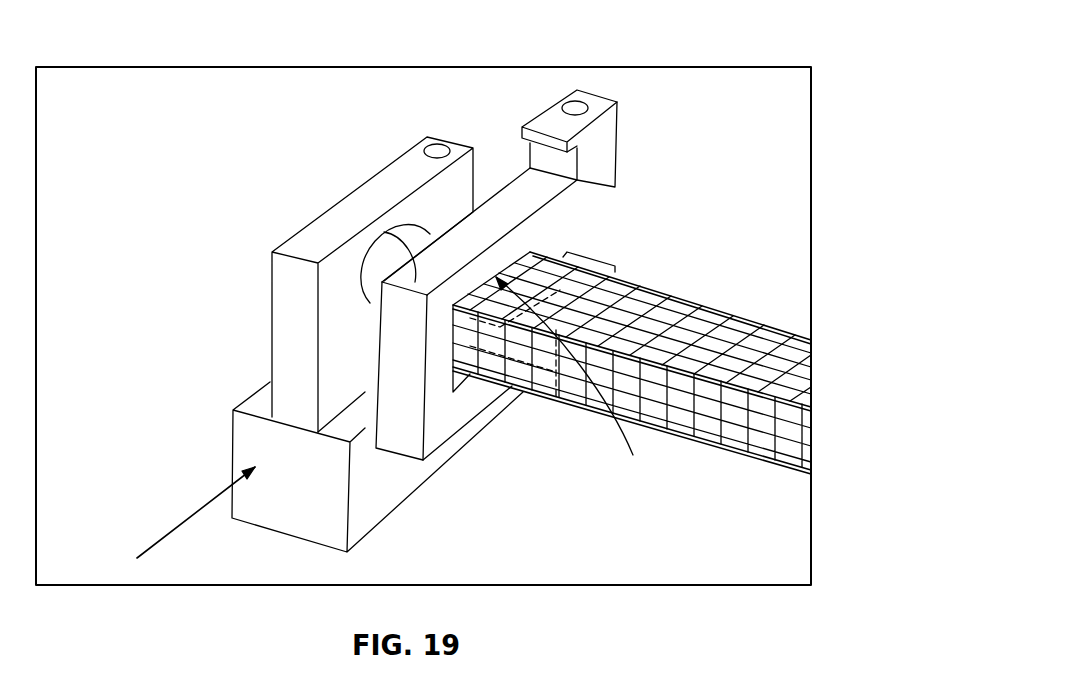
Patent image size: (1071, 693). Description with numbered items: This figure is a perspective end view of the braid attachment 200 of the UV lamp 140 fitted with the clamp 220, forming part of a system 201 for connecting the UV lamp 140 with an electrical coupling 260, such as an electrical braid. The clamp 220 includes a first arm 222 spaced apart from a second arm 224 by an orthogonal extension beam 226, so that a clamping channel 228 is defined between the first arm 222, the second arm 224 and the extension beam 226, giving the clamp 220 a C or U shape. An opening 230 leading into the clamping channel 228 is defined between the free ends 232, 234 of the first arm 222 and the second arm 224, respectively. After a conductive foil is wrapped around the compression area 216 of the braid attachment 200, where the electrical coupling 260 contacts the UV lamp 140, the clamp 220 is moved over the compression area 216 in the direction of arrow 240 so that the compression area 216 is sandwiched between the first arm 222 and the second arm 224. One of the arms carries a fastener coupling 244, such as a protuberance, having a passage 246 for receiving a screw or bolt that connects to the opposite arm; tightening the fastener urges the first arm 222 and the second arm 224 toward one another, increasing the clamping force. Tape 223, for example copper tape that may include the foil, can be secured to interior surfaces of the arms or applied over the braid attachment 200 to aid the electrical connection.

The UV lamp 140 is at (766, 172).
The braid attachment 200 is at (697, 317).
The system 201 is at (316, 92).
The compression area 216 is at (503, 383).
The clamp 220 is at (343, 388).
The first arm 222 is at (518, 388).
The tape 223 is at (578, 386).
The second arm 224 is at (412, 248).
The extension beam 226 is at (351, 443).
The clamping channel 228 is at (586, 236).
The opening 230 is at (596, 209).
The free end 232 is at (607, 270).
The free end 234 is at (607, 145).
The arrow 240 is at (163, 537).
The fastener coupling 244 is at (548, 118).
The passage 246 is at (575, 104).
The electrical coupling 260 is at (412, 272).